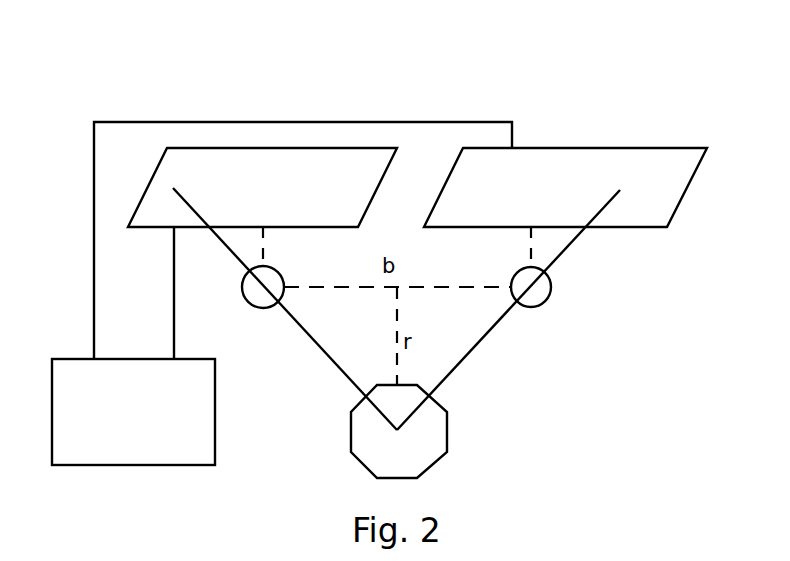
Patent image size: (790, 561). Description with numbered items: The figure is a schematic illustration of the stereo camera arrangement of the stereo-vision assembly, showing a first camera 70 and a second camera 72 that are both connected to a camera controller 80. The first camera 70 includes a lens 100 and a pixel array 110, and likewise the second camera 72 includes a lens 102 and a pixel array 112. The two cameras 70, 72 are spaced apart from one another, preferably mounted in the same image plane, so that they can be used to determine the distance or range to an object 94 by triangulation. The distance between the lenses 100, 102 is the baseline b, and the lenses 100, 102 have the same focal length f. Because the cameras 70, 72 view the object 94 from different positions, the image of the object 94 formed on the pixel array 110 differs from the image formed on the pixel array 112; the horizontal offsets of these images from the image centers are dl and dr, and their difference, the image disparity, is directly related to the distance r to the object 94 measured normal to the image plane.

The first camera 70 is at (190, 82).
The second camera 72 is at (549, 76).
The pixel array 110 is at (148, 185).
The pixel array 112 is at (565, 148).
The lens 100 is at (265, 307).
The lens 102 is at (536, 307).
The object 94 is at (446, 412).
The camera controller 80 is at (222, 401).